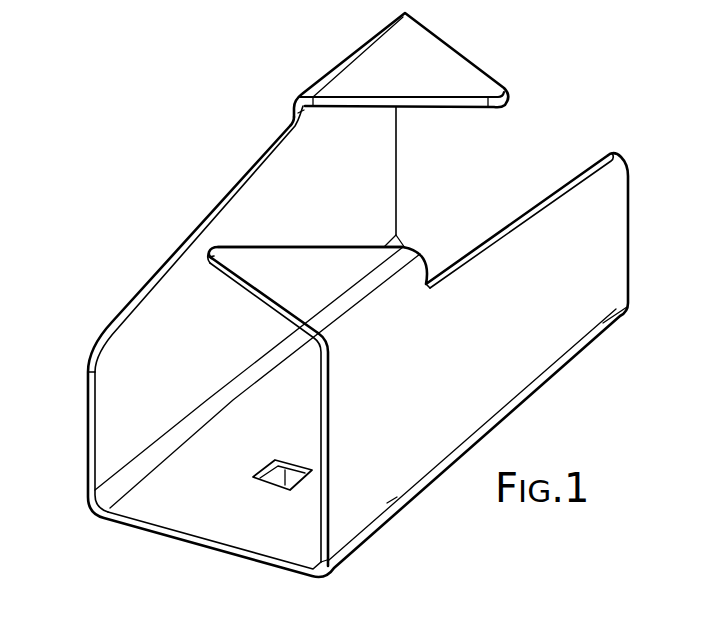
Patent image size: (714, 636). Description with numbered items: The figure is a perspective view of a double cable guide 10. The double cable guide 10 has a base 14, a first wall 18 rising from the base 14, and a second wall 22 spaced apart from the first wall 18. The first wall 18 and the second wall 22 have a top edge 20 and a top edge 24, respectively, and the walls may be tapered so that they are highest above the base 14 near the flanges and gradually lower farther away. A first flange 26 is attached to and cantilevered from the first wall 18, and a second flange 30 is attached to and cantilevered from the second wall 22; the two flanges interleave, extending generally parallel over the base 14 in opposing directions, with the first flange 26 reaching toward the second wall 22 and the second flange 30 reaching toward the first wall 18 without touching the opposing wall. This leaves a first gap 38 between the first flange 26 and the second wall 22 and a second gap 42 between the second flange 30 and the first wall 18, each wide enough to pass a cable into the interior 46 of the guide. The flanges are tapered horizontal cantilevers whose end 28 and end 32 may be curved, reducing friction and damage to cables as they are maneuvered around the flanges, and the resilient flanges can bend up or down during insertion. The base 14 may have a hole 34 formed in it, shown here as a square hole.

The double cable guide 10 is at (177, 214).
The base 14 is at (220, 510).
The first wall 18 is at (480, 358).
The top edge 20 is at (513, 218).
The second wall 22 is at (178, 352).
The top edge 24 is at (243, 182).
The first flange 26 is at (288, 279).
The end 28 is at (231, 252).
The second flange 30 is at (399, 77).
The end 32 is at (486, 93).
The hole 34 is at (291, 478).
The first gap 38 is at (197, 270).
The second gap 42 is at (522, 143).
The interior 46 is at (153, 418).